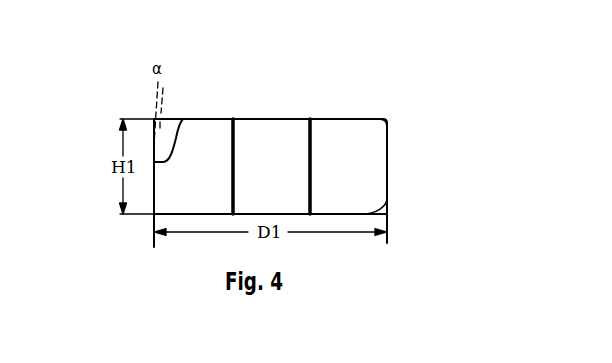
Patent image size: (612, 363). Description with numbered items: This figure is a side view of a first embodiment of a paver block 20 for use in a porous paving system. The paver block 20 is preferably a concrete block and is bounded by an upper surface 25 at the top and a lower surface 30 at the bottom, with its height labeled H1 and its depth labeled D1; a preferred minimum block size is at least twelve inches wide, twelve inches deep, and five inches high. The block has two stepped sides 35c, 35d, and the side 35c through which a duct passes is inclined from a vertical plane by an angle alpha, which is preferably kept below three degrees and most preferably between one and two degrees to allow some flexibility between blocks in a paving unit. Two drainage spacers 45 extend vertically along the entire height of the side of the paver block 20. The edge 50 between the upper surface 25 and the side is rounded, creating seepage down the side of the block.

The paver block 20 is at (433, 113).
The upper surface 25 is at (333, 116).
The lower surface 30 is at (385, 199).
The stepped side 35c is at (183, 119).
The stepped side 35d is at (388, 160).
The drainage spacer 45 is at (305, 130).
The edge 50 is at (387, 120).